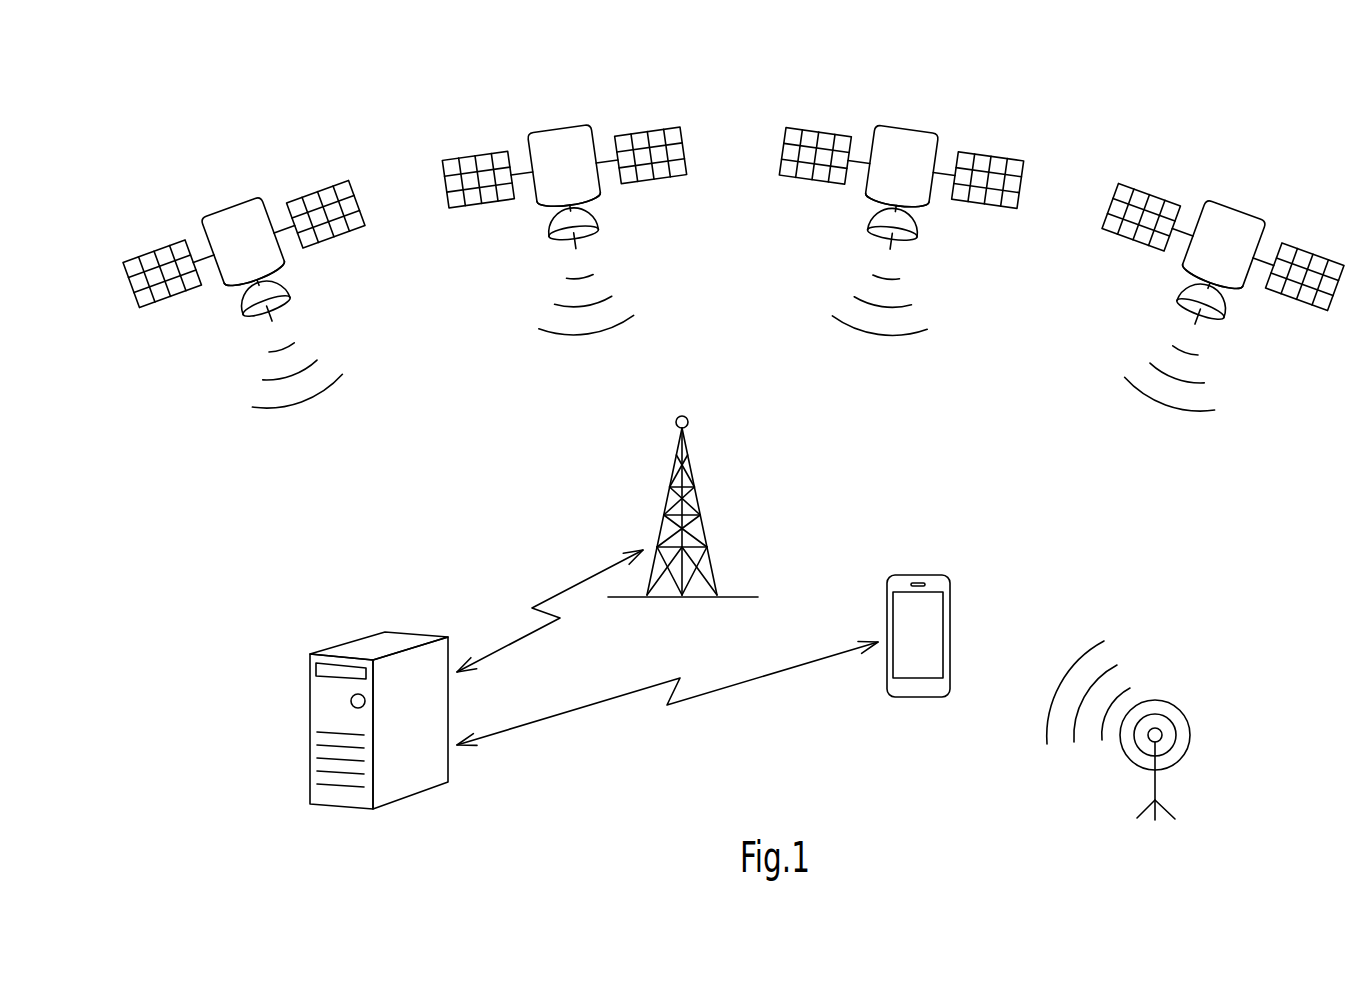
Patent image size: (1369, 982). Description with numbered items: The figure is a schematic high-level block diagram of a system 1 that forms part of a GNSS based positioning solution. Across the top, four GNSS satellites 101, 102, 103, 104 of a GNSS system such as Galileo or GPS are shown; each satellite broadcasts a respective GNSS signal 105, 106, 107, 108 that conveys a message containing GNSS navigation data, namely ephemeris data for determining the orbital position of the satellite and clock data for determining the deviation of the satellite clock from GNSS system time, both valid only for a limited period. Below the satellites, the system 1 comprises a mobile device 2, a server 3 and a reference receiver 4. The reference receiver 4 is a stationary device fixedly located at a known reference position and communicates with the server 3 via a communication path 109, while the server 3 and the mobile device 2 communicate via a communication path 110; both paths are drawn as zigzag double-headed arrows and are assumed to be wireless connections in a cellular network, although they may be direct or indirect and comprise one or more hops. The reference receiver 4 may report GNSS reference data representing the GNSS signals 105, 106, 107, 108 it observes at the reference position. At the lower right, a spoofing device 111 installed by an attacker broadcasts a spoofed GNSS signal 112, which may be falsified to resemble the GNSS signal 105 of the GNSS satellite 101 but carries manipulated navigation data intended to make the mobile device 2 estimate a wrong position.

The system 1 is at (1122, 99).
The mobile device 2 is at (920, 572).
The server 3 is at (310, 704).
The reference receiver 4 is at (710, 527).
The GNSS satellite 101 is at (230, 204).
The GNSS satellite 102 is at (558, 126).
The GNSS satellite 103 is at (905, 128).
The GNSS satellite 104 is at (1237, 207).
The GNSS signal 105 is at (300, 408).
The GNSS signal 106 is at (588, 340).
The GNSS signal 107 is at (880, 338).
The GNSS signal 108 is at (1165, 408).
The communication path 109 is at (570, 586).
The communication path 110 is at (758, 678).
The spoofing device 111 is at (1160, 790).
The spoofed GNSS signal 112 is at (1076, 661).